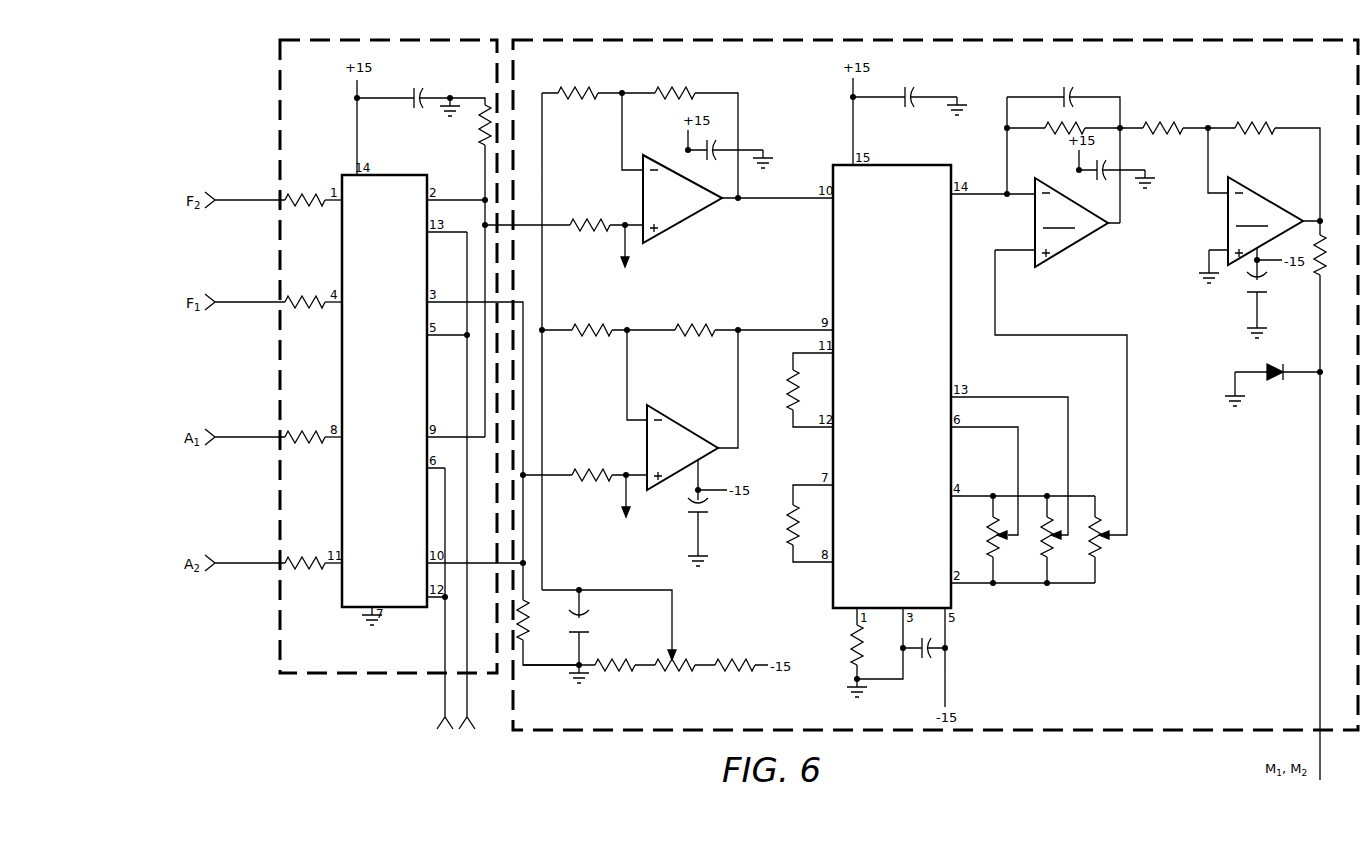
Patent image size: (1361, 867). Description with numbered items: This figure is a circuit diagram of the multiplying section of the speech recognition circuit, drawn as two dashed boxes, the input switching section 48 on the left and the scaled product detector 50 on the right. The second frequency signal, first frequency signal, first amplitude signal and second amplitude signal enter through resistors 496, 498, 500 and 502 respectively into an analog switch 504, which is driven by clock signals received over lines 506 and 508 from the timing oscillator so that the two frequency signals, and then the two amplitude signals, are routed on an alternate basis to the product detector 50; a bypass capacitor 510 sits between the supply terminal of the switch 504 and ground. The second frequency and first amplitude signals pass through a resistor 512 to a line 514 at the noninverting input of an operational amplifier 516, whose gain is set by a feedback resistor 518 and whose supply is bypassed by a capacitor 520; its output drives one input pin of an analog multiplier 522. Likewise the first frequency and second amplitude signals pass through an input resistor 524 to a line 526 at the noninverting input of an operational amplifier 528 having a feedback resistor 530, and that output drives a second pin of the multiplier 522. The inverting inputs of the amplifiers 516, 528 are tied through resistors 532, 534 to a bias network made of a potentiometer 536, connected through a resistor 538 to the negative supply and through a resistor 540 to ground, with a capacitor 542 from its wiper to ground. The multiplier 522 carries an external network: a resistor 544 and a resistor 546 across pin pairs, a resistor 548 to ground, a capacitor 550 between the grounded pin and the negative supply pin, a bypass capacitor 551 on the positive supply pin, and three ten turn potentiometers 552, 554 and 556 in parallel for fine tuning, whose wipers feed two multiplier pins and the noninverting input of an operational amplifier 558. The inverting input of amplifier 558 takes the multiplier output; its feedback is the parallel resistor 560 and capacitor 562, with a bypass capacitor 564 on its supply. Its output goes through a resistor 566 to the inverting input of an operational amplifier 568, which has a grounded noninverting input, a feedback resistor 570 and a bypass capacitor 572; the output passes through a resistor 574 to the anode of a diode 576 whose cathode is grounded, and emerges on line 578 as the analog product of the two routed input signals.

The scaled ratio detector 48 is at (280, 105).
The scaled product detector 50 is at (550, 730).
The resistor 496 is at (307, 195).
The resistor 498 is at (307, 297).
The resistor 500 is at (307, 432).
The resistor 502 is at (307, 558).
The analog switch 504 is at (389, 207).
The line 506 is at (437, 697).
The line 508 is at (478, 690).
The bypass capacitor 510 is at (415, 86).
The resistor 512 is at (596, 234).
The line 514 is at (632, 213).
The operational amplifier 516 is at (675, 215).
The feedback resistor 518 is at (686, 92).
The bypass capacitor 520 is at (722, 130).
The analog multiplier 522 is at (924, 205).
The input resistor 524 is at (596, 484).
The line 526 is at (630, 475).
The operational amplifier 528 is at (676, 428).
The feedback resistor 530 is at (688, 329).
The resistor 532 is at (588, 92).
The resistor 534 is at (590, 329).
The potentiometer 536 is at (680, 670).
The resistor 538 is at (730, 652).
The resistor 540 is at (623, 670).
The capacitor 542 is at (596, 630).
The resistor 544 is at (782, 392).
The resistor 546 is at (786, 540).
The resistor 548 is at (844, 664).
The capacitor 550 is at (938, 654).
The bypass capacitor 551 is at (913, 91).
The potentiometer 552 is at (1003, 514).
The potentiometer 554 is at (1050, 518).
The potentiometer 556 is at (1102, 518).
The operational amplifier 558 is at (1071, 222).
The resistor 560 is at (1063, 134).
The capacitor 562 is at (1070, 80).
The bypass capacitor 564 is at (1109, 164).
The resistor 566 is at (1172, 120).
The operational amplifier 568 is at (1265, 221).
The feedback resistor 570 is at (1260, 120).
The bypass capacitor 572 is at (1246, 294).
The resistor 574 is at (1322, 251).
The diode 576 is at (1274, 376).
The line 578 is at (1312, 689).